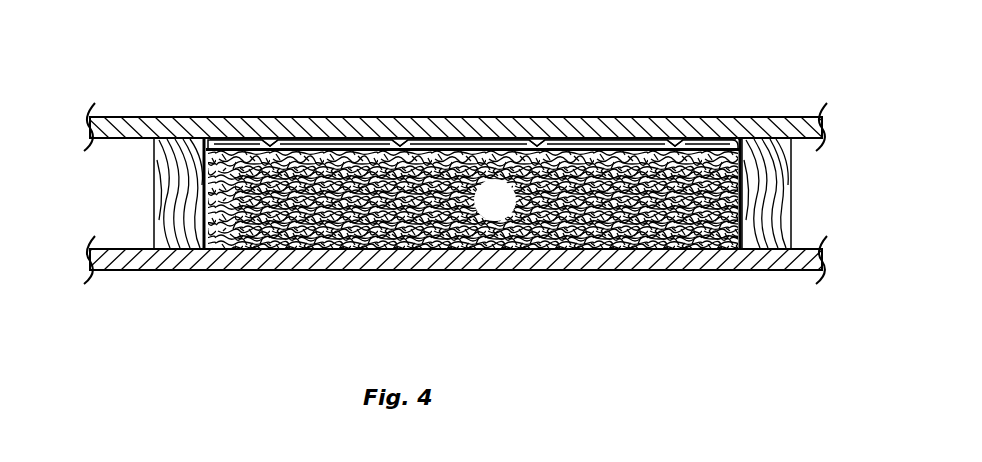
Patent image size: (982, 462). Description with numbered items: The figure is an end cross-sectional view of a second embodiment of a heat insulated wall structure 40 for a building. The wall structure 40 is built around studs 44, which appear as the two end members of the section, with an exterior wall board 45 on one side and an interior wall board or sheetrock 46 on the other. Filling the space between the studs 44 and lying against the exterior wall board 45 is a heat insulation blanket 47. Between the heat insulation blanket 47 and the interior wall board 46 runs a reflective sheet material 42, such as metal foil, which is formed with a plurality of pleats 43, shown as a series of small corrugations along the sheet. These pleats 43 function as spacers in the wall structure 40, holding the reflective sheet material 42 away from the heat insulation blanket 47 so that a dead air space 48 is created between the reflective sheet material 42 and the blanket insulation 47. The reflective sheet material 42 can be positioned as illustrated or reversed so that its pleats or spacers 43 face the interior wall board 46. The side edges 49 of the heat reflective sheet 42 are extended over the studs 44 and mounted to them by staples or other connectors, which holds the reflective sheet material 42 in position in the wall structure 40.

The wall structure 40 is at (218, 103).
The reflective sheet material 42 is at (580, 138).
The pleats 43 is at (400, 142).
The studs 44 is at (173, 207).
The exterior wall board 45 is at (525, 265).
The interior wall board 46 is at (483, 130).
The heat insulation blanket 47 is at (506, 211).
The dead air space 48 is at (338, 146).
The side edges 49 is at (762, 146).